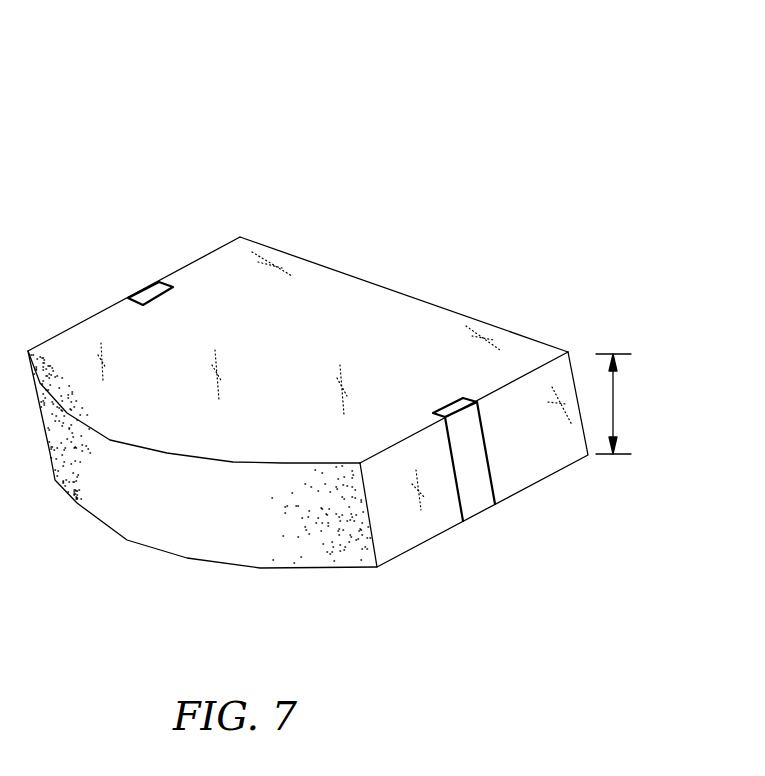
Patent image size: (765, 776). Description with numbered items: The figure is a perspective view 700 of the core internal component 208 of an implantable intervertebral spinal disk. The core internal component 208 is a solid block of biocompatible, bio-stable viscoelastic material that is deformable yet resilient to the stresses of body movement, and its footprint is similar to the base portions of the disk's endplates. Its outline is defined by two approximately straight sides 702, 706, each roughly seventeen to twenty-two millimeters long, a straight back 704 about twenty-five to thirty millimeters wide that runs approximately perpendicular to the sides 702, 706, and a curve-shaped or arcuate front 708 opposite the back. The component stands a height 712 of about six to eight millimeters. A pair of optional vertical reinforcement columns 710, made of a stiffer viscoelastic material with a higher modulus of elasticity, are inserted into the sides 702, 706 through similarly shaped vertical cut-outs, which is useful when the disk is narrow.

The perspective view 700 is at (478, 61).
The straight side 702 is at (195, 260).
The straight back 704 is at (393, 288).
The straight side 706 is at (543, 482).
The arcuate front 708 is at (126, 538).
The vertical reinforcement column 710 is at (147, 287).
The height 712 is at (613, 402).
The core internal component 208 is at (386, 603).